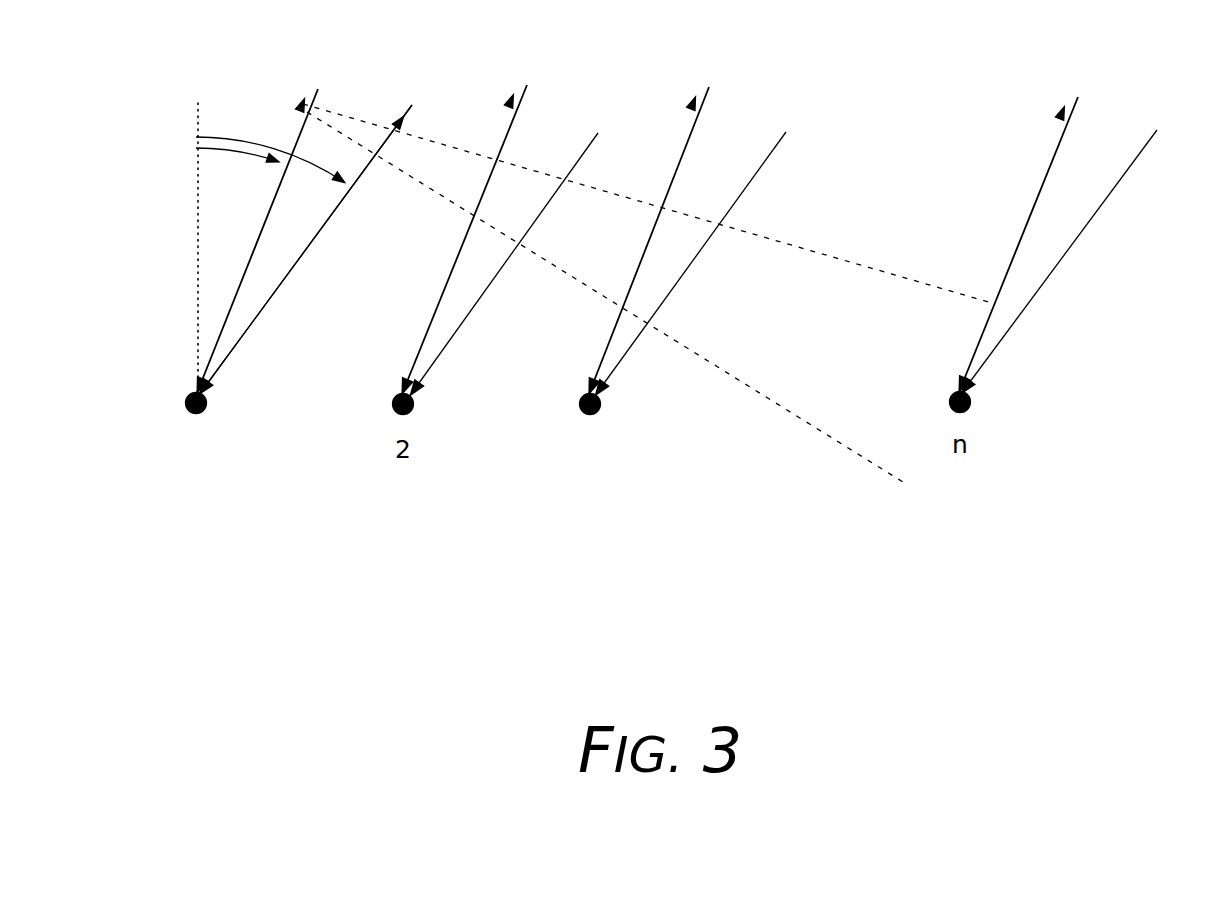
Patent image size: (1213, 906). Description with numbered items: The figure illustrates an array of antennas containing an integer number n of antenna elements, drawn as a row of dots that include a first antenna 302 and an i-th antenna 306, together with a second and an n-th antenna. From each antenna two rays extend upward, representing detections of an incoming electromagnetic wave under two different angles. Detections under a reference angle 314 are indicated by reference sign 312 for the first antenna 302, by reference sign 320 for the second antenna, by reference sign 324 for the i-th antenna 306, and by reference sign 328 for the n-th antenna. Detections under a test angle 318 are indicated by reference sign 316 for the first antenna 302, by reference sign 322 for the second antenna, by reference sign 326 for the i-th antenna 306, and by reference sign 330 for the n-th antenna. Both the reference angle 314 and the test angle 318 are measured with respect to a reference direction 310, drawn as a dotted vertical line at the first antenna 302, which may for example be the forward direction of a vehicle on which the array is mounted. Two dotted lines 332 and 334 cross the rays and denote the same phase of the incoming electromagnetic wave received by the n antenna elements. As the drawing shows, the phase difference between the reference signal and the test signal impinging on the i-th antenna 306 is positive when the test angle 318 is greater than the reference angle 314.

The first antenna 302 is at (215, 457).
The i-th antenna 306 is at (600, 453).
The reference direction 310 is at (195, 240).
The detection under reference angle for first antenna 312 is at (279, 226).
The reference angle 314 is at (210, 170).
The detection under test angle for first antenna 316 is at (324, 236).
The test angle 318 is at (292, 250).
The detection under reference angle for second antenna 320 is at (484, 226).
The detection under test angle for second antenna 322 is at (570, 178).
The detection under reference angle for i-th antenna 324 is at (669, 228).
The detection under test angle for i-th antenna 326 is at (747, 187).
The detection under reference angle for n-th antenna 328 is at (1040, 232).
The detection under test angle for n-th antenna 330 is at (1095, 217).
The dotted line 332 is at (893, 272).
The dotted line 334 is at (762, 392).